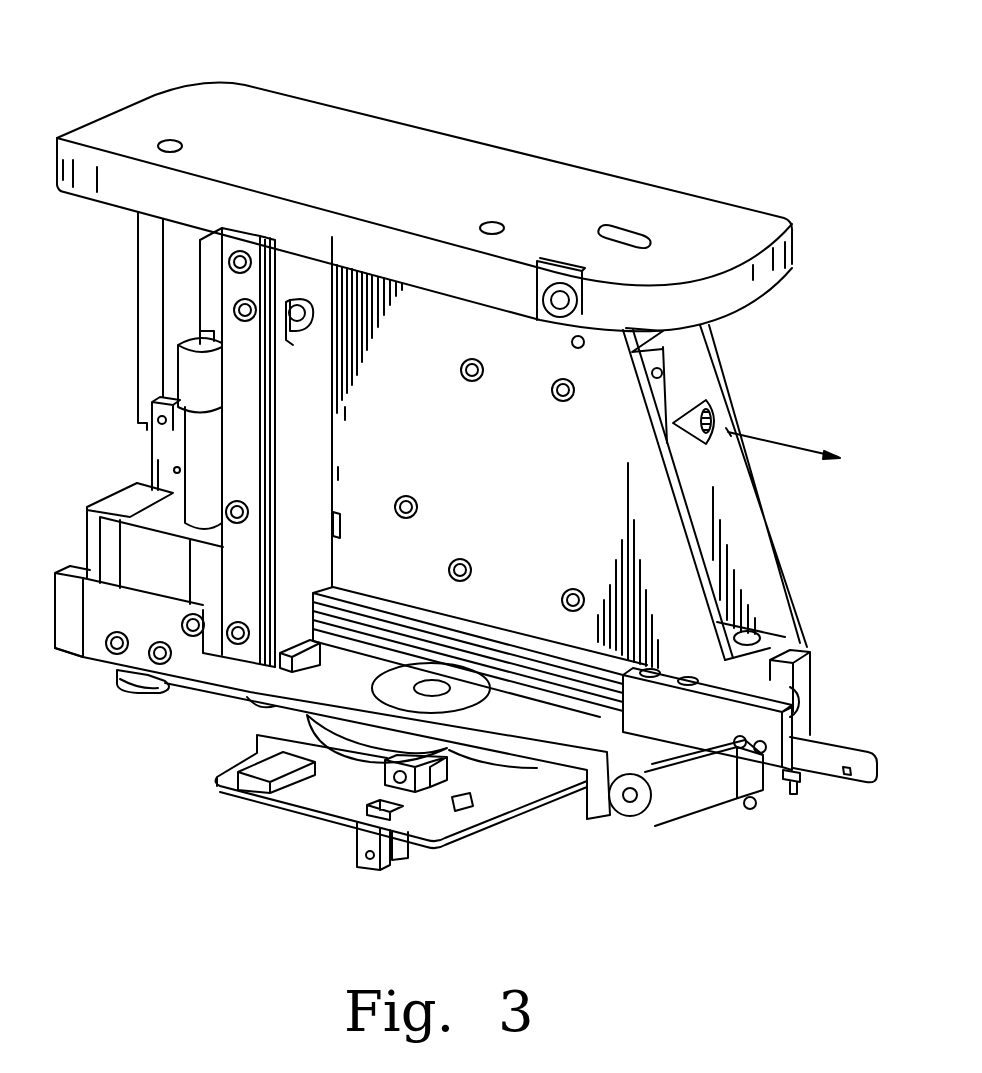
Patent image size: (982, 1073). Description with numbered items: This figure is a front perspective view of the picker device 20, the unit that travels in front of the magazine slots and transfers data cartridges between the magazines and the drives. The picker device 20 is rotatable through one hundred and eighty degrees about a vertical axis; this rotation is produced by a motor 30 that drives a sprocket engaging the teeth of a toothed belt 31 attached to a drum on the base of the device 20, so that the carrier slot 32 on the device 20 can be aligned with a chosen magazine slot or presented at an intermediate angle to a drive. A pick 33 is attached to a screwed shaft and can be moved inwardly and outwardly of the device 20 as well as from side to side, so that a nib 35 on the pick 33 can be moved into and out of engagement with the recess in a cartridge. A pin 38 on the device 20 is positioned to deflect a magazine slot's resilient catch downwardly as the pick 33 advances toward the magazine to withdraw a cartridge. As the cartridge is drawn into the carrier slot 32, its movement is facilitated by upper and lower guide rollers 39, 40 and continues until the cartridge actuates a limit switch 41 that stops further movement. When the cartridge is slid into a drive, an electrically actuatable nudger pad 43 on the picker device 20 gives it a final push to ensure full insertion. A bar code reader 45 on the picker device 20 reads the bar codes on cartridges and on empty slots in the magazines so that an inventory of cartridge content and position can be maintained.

The picker device 20 is at (126, 62).
The motor 30 is at (190, 368).
The toothed belt 31 is at (306, 722).
The carrier slot 32 is at (481, 497).
The pick 33 is at (849, 743).
The nib 35 is at (847, 775).
The pin 38 is at (790, 792).
The upper guide roller 39 is at (561, 298).
The lower guide roller 40 is at (629, 800).
The limit switch 41 is at (315, 305).
The nudger pad 43 is at (809, 681).
The bar code reader 45 is at (663, 375).